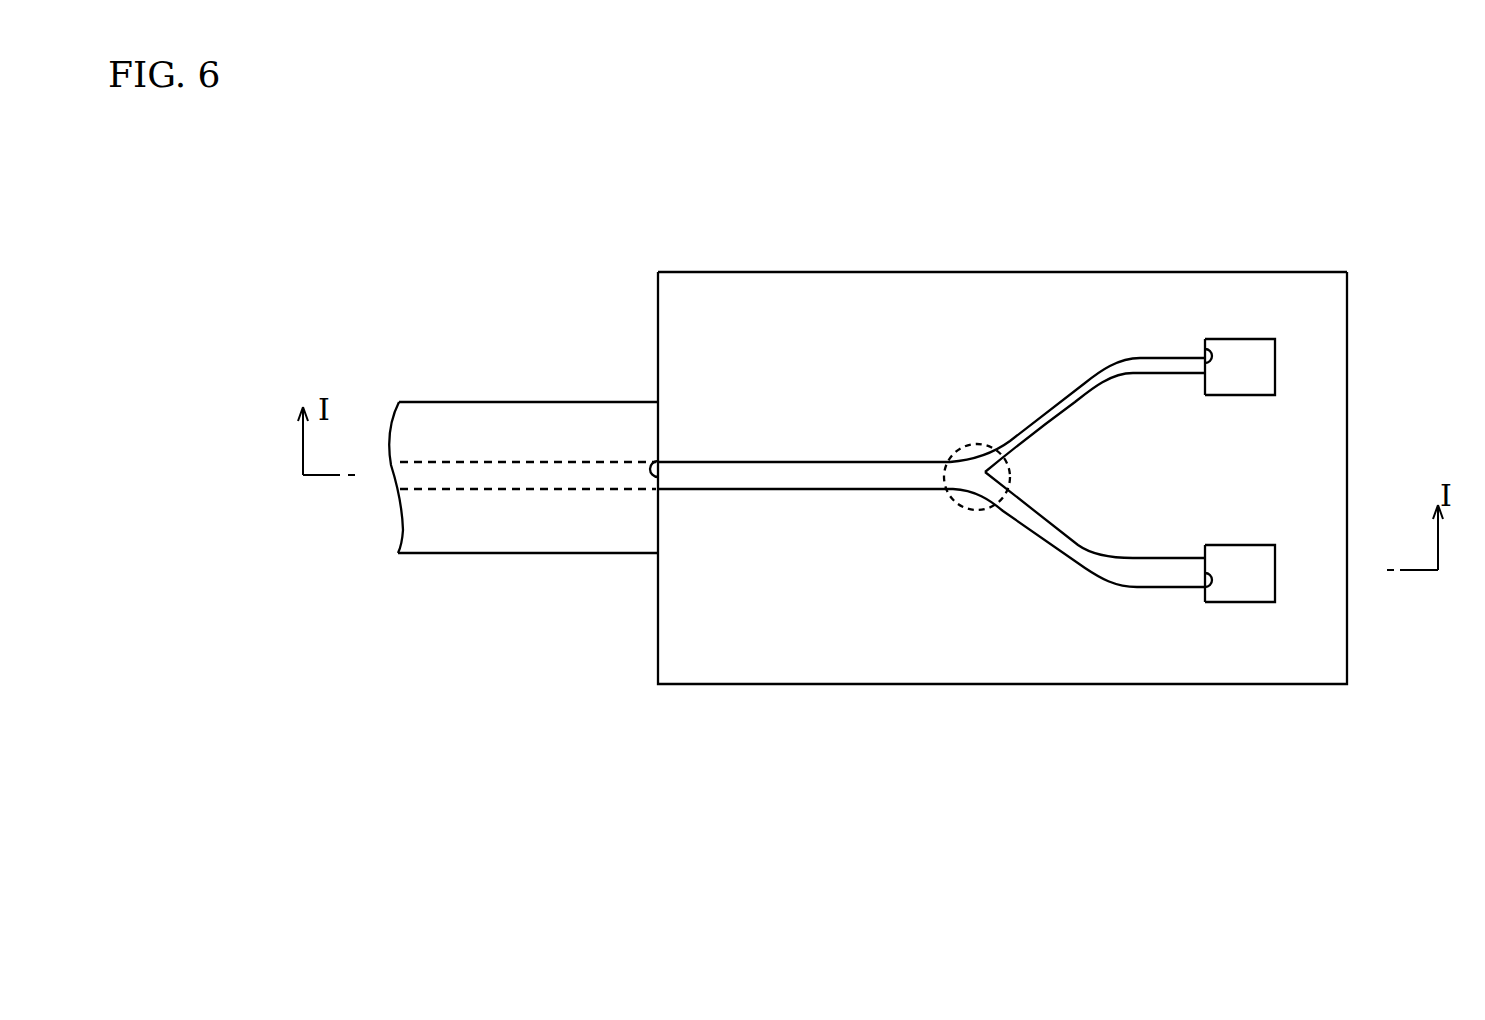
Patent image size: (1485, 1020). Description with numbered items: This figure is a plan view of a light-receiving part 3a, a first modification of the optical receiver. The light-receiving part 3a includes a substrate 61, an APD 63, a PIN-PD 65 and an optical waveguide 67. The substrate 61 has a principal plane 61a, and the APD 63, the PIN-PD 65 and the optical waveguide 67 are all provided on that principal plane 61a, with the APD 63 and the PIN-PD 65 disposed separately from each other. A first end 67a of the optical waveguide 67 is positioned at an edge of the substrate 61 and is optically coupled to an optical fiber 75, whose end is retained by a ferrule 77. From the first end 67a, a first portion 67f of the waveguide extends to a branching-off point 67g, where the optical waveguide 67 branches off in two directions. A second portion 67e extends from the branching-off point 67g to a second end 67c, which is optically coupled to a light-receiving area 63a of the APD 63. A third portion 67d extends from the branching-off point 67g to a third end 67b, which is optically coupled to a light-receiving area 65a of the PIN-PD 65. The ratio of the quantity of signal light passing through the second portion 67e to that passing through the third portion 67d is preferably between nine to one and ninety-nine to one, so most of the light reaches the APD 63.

The light-receiving part 3a is at (1245, 185).
The substrate 61 is at (878, 272).
The principal plane 61a is at (753, 308).
The APD 63 is at (1276, 587).
The light-receiving area 63a is at (1207, 568).
The PIN-PD 65 is at (1276, 364).
The light-receiving area 65a is at (1207, 374).
The optical waveguide 67 is at (932, 477).
The first end 67a is at (657, 460).
The third end 67b is at (1207, 343).
The second end 67c is at (1203, 592).
The third portion 67d is at (1090, 373).
The second portion 67e is at (1070, 563).
The first portion 67f is at (800, 490).
The branching-off point 67g is at (963, 509).
The optical fiber 75 is at (535, 491).
The ferrule 77 is at (455, 554).